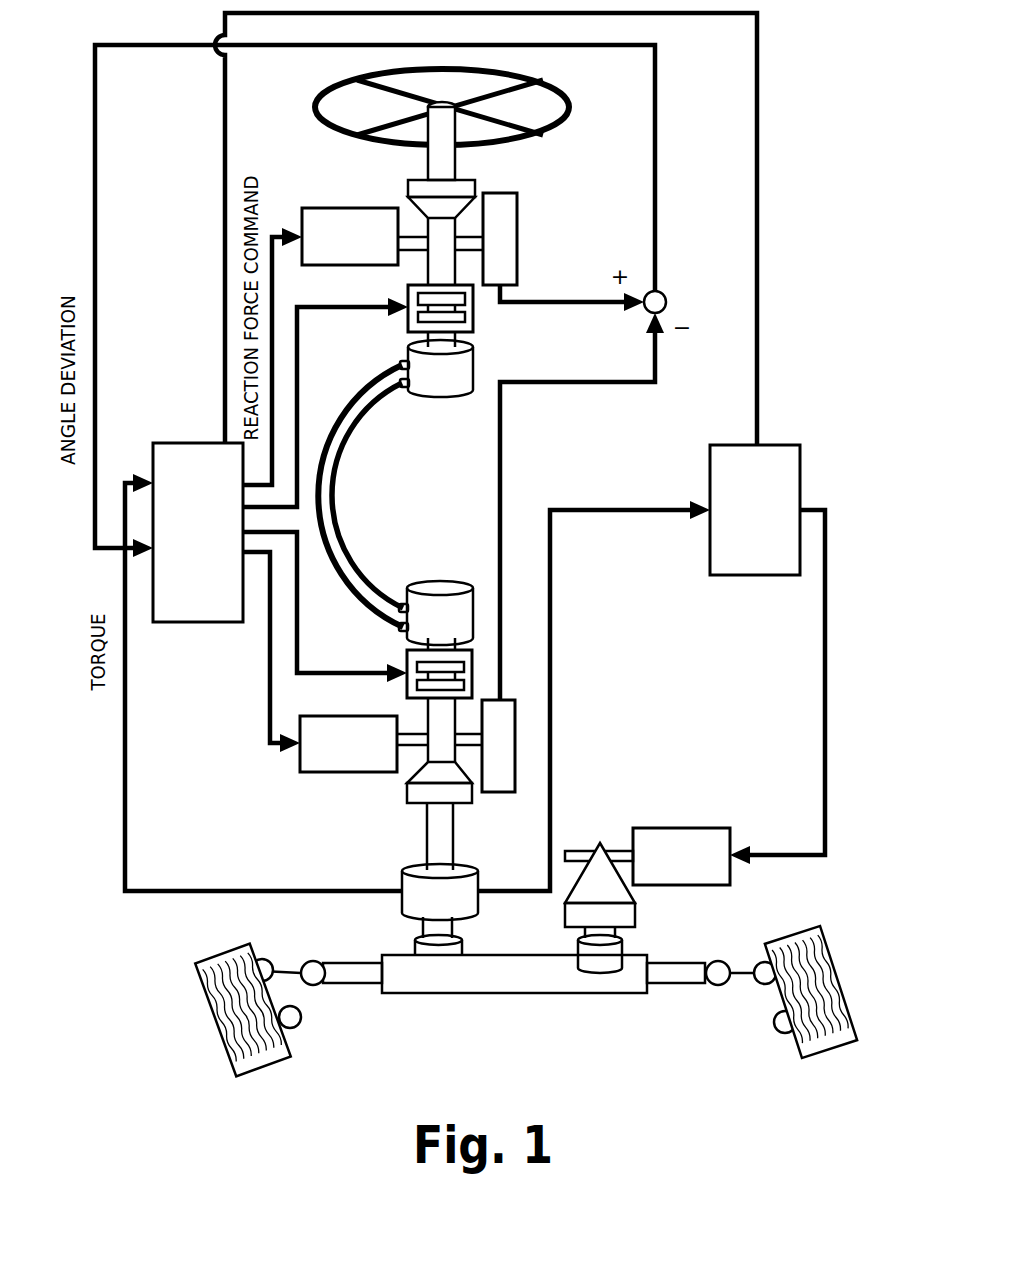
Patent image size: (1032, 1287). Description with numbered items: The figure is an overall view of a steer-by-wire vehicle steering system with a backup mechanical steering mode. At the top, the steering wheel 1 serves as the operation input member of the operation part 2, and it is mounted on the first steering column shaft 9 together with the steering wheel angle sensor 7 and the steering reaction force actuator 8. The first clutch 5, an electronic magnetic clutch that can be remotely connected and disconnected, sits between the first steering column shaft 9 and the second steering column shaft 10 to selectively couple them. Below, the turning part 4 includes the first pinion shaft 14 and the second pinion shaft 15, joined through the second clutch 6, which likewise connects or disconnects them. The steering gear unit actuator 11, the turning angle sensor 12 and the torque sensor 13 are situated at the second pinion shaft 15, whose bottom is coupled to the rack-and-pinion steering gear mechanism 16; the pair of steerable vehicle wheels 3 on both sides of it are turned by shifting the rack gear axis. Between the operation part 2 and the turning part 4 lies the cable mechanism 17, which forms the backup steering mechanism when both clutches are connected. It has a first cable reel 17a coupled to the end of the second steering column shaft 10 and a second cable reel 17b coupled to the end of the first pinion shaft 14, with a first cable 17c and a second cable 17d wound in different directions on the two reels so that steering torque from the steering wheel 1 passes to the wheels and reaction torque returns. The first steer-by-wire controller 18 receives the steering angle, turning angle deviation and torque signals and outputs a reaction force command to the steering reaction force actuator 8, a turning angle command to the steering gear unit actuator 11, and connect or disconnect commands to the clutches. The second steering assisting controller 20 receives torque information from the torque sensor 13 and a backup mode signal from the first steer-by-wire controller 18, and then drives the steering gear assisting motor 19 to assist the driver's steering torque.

The steering wheel 1 is at (540, 82).
The operation part 2 is at (463, 226).
The steerable vehicle wheels 3 is at (212, 1029).
The turning part 4 is at (511, 828).
The first clutch 5 is at (473, 320).
The second clutch 6 is at (407, 660).
The steering wheel angle sensor 7 is at (517, 266).
The steering reaction force actuator 8 is at (352, 208).
The first steering column shaft 9 is at (428, 266).
The second steering column shaft 10 is at (458, 342).
The steering gear unit actuator 11 is at (339, 772).
The turning angle sensor 12 is at (498, 792).
The torque sensor 13 is at (402, 905).
The first pinion shaft 14 is at (456, 644).
The second pinion shaft 15 is at (428, 720).
The steering gear mechanism 16 is at (478, 995).
The cable mechanism 17 is at (402, 496).
The first cable reel 17a is at (446, 392).
The second cable reel 17b is at (421, 558).
The first cable 17c is at (322, 476).
The second cable 17d is at (340, 508).
The first steer-by-wire controller 18 is at (197, 443).
The steering gear assisting motor 19 is at (688, 828).
The second steering assisting controller 20 is at (800, 468).